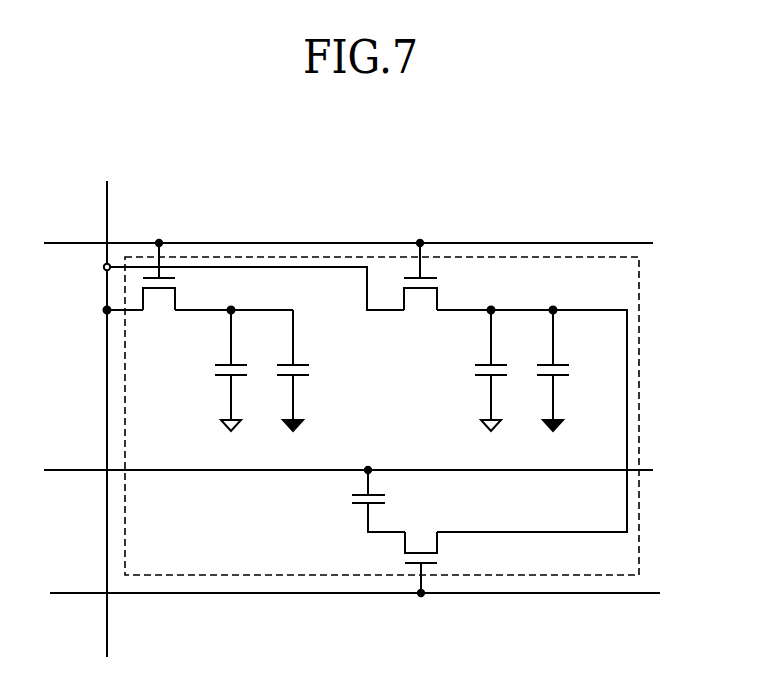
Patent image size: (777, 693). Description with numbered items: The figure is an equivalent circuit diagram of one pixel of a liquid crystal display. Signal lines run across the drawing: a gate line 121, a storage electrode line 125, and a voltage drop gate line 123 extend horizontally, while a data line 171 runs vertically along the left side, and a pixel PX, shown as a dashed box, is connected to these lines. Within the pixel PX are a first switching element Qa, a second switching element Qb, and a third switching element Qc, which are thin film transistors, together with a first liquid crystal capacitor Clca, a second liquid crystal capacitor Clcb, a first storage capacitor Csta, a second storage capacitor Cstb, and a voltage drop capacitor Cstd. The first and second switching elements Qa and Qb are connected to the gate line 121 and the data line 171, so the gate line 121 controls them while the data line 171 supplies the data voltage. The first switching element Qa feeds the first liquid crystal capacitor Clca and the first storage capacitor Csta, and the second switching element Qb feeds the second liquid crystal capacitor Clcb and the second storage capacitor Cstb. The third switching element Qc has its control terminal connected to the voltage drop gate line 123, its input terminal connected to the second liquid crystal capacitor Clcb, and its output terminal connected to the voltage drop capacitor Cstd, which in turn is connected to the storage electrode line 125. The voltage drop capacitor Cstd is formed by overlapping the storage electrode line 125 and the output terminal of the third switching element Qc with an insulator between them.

The data line 171 is at (107, 203).
The gate line 121 is at (369, 240).
The storage electrode line 125 is at (369, 468).
The voltage drop gate line 123 is at (376, 592).
The pixel PX is at (263, 256).
The first switching element Qa is at (159, 290).
The second switching element Qb is at (420, 290).
The third switching element Qc is at (421, 549).
The first liquid crystal capacitor Clca is at (206, 370).
The first storage capacitor Csta is at (320, 370).
The second liquid crystal capacitor Clcb is at (467, 370).
The second storage capacitor Cstb is at (578, 370).
The voltage drop capacitor Cstd is at (351, 501).